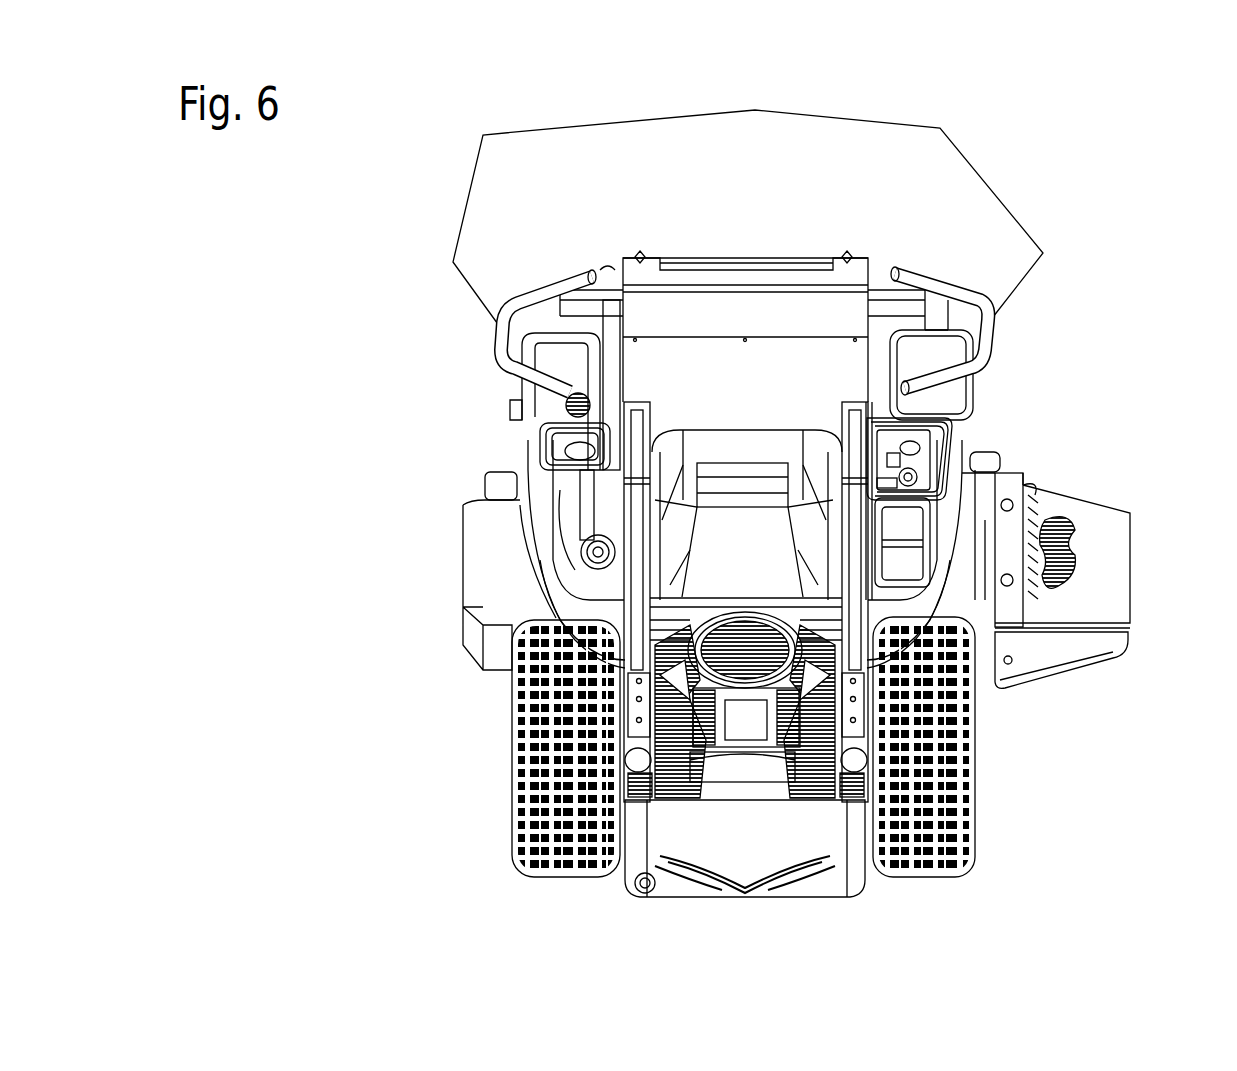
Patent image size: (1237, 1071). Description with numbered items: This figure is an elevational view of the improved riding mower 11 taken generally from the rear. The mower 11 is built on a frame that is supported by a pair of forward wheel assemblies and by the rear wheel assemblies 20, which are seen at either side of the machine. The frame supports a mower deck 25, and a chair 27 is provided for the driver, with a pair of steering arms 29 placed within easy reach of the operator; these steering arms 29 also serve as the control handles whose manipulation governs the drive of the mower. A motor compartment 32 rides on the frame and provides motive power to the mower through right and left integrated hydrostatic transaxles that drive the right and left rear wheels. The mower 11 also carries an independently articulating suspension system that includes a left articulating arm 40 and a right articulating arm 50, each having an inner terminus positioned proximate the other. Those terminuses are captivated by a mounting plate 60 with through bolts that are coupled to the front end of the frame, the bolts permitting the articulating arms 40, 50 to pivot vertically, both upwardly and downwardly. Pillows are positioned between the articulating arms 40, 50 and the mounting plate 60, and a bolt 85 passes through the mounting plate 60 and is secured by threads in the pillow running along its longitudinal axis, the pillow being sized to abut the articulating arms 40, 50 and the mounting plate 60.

The riding mower 11 is at (1106, 418).
The rear wheel assemblies 20 is at (527, 853).
The mower deck 25 is at (467, 603).
The chair 27 is at (742, 547).
The steering arms 29 is at (755, 110).
The motor compartment 32 is at (823, 800).
The left articulating arm 40 is at (891, 274).
The right articulating arm 50 is at (601, 277).
The mounting plate 60 is at (724, 256).
The bolt 85 is at (637, 250).